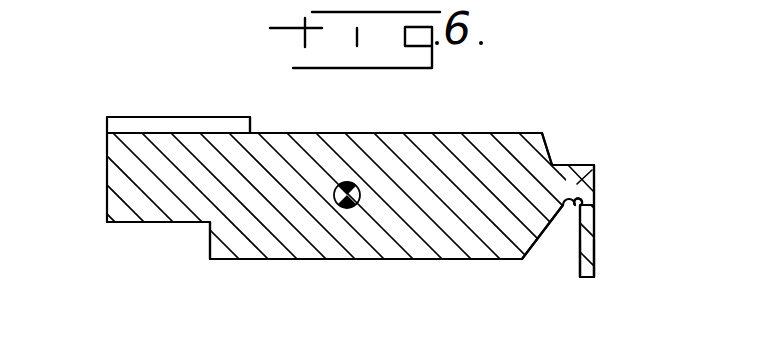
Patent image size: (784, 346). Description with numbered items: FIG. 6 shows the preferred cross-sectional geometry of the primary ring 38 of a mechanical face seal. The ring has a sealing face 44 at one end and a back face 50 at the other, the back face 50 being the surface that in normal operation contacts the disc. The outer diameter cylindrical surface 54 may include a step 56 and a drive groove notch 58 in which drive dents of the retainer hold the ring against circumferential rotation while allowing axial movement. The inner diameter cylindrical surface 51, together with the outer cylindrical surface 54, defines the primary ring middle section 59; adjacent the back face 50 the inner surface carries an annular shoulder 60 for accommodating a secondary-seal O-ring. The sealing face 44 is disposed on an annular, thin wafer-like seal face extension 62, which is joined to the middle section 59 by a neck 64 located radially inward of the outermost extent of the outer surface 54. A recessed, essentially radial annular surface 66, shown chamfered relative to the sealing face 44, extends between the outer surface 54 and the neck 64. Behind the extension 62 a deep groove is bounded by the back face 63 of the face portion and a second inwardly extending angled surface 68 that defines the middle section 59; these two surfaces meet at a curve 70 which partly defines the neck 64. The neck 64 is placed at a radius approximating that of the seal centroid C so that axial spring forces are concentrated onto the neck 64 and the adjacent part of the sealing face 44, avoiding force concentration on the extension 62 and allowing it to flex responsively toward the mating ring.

The primary ring 38 is at (487, 120).
The sealing face 44 is at (596, 246).
The back face 50 is at (106, 183).
The inner diameter cylindrical surface 51 is at (360, 262).
The outer diameter cylindrical surface 54 is at (413, 132).
The step 56 is at (287, 82).
The drive groove notch 58 is at (182, 124).
The primary ring middle section 59 is at (290, 262).
The annular shoulder 60 is at (163, 223).
The seal face extension 62 is at (590, 256).
The back face of face portion 63 is at (578, 251).
The neck 64 is at (598, 167).
The recessed annular surface 66 is at (550, 152).
The inwardly extending angled surface 68 is at (522, 257).
The curve 70 is at (594, 213).
The seal centroid C is at (347, 182).